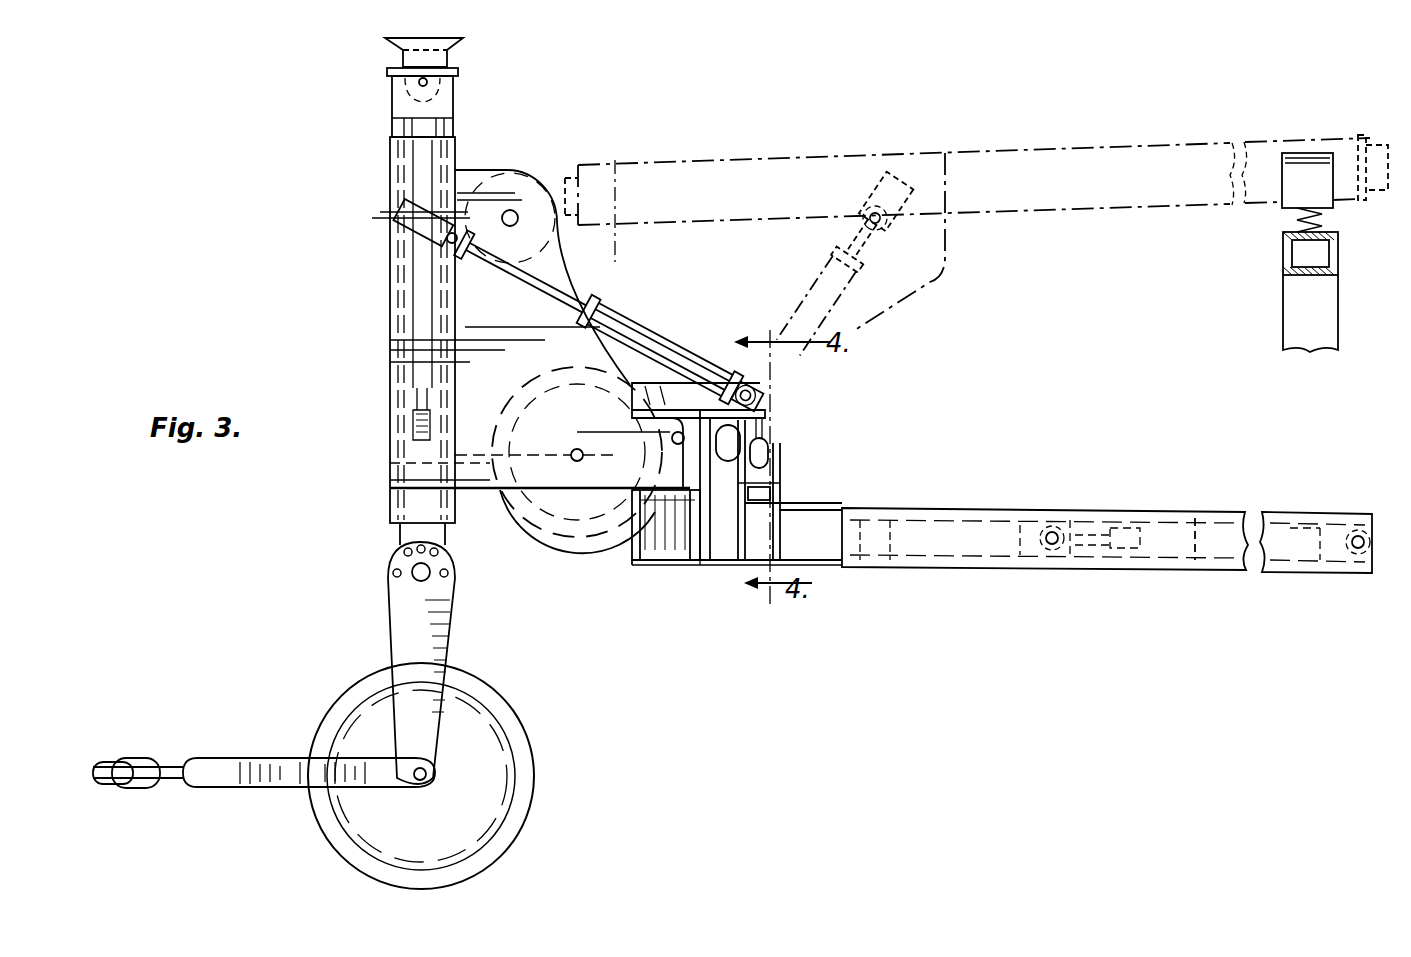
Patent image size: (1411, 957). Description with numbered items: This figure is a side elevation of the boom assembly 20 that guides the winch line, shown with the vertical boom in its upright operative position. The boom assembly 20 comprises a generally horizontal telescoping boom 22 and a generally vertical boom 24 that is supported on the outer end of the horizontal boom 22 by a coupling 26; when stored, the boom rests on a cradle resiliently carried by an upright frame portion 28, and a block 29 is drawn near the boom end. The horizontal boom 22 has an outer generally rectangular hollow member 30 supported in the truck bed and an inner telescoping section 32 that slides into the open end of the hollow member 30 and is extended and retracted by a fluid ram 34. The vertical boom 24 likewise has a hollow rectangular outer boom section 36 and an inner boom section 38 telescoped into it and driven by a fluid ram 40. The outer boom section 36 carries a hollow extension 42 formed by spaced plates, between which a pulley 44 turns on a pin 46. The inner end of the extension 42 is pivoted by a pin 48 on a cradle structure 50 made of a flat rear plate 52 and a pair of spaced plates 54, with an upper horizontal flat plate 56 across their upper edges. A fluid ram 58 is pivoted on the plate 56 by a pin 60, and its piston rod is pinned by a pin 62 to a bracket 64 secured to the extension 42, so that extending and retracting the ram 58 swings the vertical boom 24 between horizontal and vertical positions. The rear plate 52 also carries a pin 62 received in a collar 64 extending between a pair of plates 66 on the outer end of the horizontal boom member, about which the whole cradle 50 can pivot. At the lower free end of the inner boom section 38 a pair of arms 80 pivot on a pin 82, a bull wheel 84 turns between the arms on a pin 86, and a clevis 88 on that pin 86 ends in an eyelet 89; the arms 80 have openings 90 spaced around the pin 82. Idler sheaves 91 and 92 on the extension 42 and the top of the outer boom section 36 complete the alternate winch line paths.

The boom assembly 20 is at (296, 225).
The horizontal telescoping boom 22 is at (953, 564).
The vertical boom 24 is at (396, 422).
The coupling 26 is at (808, 434).
The upright frame portion 28 is at (976, 246).
The boom end block 29 is at (1310, 252).
The outer hollow member 30 is at (1322, 572).
The inner telescoping section 32 is at (820, 525).
The fluid ram 34 is at (1211, 538).
The outer boom section 36 is at (395, 88).
The inner boom section 38 is at (400, 533).
The fluid ram 40 is at (390, 338).
The hollow extension 42 is at (481, 487).
The pulley or sheave 44 is at (549, 515).
The pin 46 is at (571, 455).
The pin 48 is at (640, 428).
The cradle structure 50 is at (632, 548).
The rear plate 52 is at (702, 545).
The spaced plates 54 is at (660, 548).
The upper horizontal flat plate 56 is at (768, 410).
The fluid ram 58 is at (636, 323).
The pin 60 is at (772, 388).
The pin 62 is at (452, 245).
The bracket 64 is at (402, 218).
The plates 66 is at (780, 490).
The arms 80 is at (408, 615).
The pin 82 is at (430, 578).
The sheave or bull wheel 84 is at (345, 698).
The pin 86 is at (420, 782).
The clevis 88 is at (236, 762).
The eyelet 89 is at (178, 782).
The openings 90 is at (393, 573).
The idler sheave 91 is at (540, 190).
The idler sheave 92 is at (452, 42).